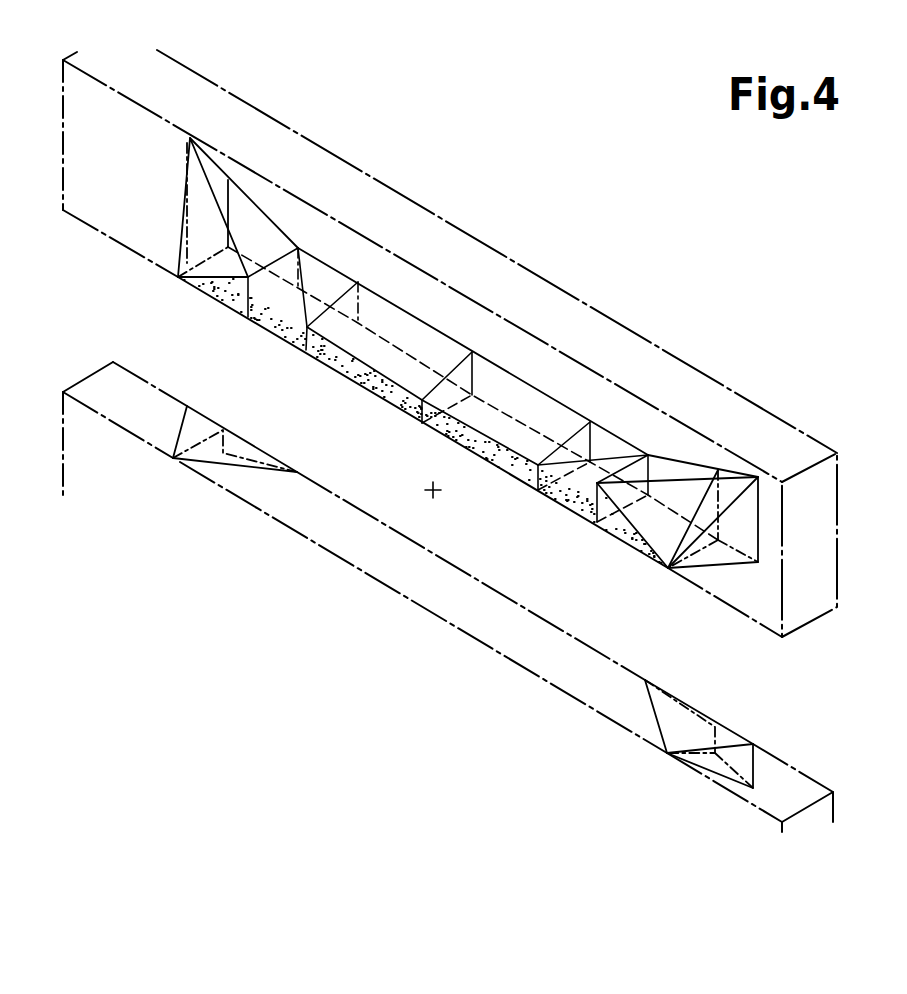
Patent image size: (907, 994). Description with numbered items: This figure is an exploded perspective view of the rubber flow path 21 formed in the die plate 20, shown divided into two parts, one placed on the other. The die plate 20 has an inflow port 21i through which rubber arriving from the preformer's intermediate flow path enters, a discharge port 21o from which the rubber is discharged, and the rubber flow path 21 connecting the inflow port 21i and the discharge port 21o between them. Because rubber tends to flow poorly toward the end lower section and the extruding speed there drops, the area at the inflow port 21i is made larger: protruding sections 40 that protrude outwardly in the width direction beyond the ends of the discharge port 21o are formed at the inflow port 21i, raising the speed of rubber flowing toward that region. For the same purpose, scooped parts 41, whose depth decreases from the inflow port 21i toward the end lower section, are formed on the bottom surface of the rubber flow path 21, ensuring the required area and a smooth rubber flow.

The die plate 20 is at (838, 473).
The rubber flow path 21 is at (640, 309).
The inflow port 21i is at (413, 335).
The discharge port 21o is at (557, 502).
The protruding sections 40 is at (214, 160).
The scooped parts 41 is at (229, 413).